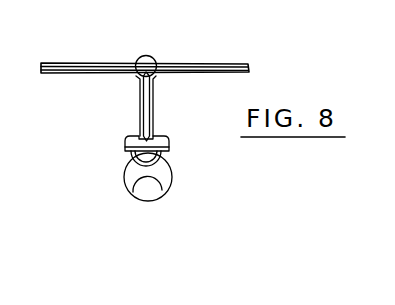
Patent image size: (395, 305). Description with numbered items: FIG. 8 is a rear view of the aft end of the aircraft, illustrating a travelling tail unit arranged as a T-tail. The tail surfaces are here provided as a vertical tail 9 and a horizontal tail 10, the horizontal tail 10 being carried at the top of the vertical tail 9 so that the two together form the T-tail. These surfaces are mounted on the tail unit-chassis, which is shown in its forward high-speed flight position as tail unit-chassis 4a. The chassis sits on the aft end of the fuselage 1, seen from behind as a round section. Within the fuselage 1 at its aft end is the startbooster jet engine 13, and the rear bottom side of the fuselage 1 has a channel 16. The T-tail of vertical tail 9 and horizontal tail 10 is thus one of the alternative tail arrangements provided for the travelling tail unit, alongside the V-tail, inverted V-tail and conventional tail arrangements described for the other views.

The horizontal tail 10 is at (180, 56).
The vertical tail 9 is at (145, 101).
The tail unit-chassis in its forward high-speed flight position 4a is at (106, 170).
The fuselage 1 is at (172, 180).
The startbooster jet engine 13 is at (223, 174).
The channel in the rear bottom side of the fuselage 16 is at (137, 180).